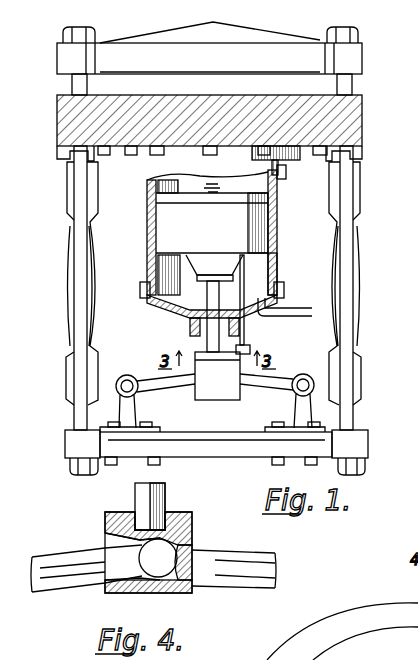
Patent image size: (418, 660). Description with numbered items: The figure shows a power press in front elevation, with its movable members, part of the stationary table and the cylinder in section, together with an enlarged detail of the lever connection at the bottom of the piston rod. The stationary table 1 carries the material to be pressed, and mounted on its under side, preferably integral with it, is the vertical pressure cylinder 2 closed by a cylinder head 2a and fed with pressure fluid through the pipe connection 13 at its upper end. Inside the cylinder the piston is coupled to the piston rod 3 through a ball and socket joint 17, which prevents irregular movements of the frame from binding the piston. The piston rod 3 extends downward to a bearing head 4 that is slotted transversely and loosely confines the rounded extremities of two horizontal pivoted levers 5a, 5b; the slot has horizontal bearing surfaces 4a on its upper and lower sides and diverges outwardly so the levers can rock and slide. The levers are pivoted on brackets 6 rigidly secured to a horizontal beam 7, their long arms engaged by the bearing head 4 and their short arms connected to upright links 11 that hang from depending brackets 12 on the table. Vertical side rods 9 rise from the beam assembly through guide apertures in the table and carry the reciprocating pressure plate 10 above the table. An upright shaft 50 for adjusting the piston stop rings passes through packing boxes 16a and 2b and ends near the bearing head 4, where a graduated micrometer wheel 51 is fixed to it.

In FIG. 1, the pressure plate 10 is at (209, 58).
In FIG. 1, the table 1 is at (75, 120).
In FIG. 1, the depending brackets 12 is at (62, 151).
In FIG. 1, the pressure cylinder 2 is at (152, 178).
In FIG. 1, the pipe connection 13 is at (286, 173).
In FIG. 1, the vertical links 11 is at (72, 291).
In FIG. 1, the packing box 16a is at (279, 260).
In FIG. 1, the cylinder head 2a is at (170, 303).
In FIG. 1, the ball and socket joint 17 is at (286, 311).
In FIG. 1, the packing box 2b is at (245, 333).
In FIG. 1, the upright shaft 50 is at (251, 350).
In FIG. 1, the piston rod 3 is at (206, 345).
In FIG. 4, the piston rod 3 is at (142, 494).
In FIG. 1, the micrometer wheel 51 is at (217, 376).
In FIG. 1, the bearing head 4 is at (214, 390).
In FIG. 4, the bearing head 4 is at (172, 518).
In FIG. 1, the lever 5b is at (113, 382).
In FIG. 4, the lever 5b is at (68, 612).
In FIG. 1, the lever 5a is at (317, 365).
In FIG. 4, the lever 5a is at (263, 612).
In FIG. 1, the brackets 6 is at (136, 413).
In FIG. 1, the horizontal beam 7 is at (228, 457).
In FIG. 1, the side rods 9 is at (80, 412).
In FIG. 4, the bearing surfaces 4a is at (195, 540).